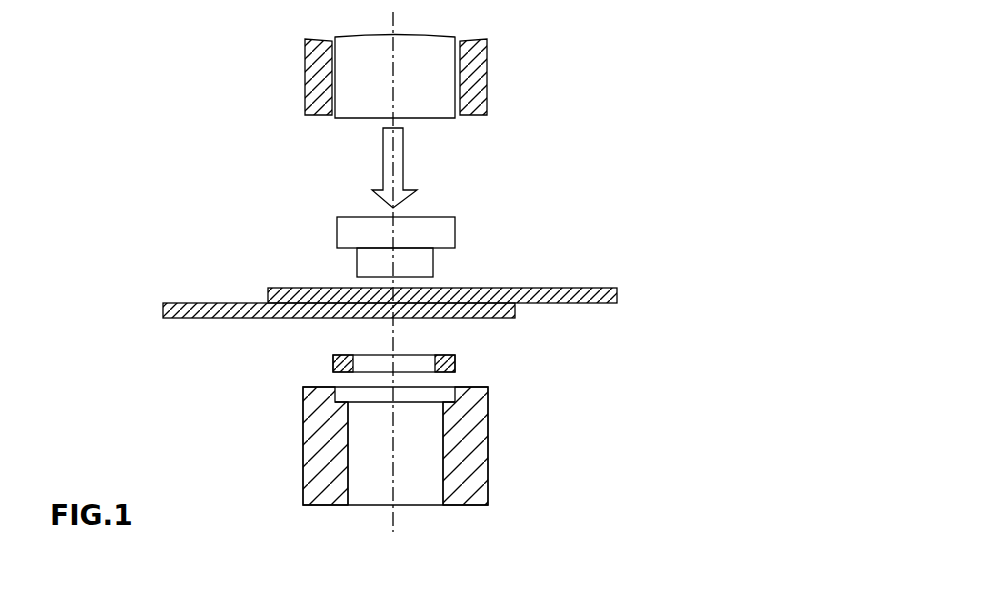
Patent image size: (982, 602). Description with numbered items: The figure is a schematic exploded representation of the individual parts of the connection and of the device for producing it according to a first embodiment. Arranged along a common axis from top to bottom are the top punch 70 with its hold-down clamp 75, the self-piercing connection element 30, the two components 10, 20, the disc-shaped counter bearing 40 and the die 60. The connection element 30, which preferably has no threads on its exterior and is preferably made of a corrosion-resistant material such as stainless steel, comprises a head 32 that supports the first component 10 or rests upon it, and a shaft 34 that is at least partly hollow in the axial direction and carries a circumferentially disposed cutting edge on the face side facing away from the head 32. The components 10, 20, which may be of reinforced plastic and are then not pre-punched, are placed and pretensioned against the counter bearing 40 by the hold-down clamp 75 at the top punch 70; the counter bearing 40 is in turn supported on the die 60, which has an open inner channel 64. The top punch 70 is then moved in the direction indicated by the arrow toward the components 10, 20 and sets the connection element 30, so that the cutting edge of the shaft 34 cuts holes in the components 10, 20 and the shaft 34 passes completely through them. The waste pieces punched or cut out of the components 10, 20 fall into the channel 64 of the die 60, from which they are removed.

The first component 10 is at (607, 295).
The second component 20 is at (163, 313).
The self-piercing connection element 30 is at (365, 202).
The head 32 is at (350, 230).
The shaft 34 is at (370, 260).
The counter bearing 40 is at (316, 364).
The die 60 is at (468, 475).
The inner channel 64 is at (415, 487).
The top punch 70 is at (423, 62).
The hold-down clamp 75 is at (313, 63).